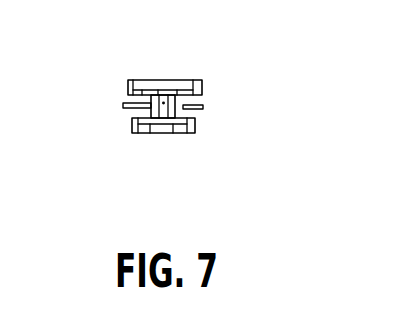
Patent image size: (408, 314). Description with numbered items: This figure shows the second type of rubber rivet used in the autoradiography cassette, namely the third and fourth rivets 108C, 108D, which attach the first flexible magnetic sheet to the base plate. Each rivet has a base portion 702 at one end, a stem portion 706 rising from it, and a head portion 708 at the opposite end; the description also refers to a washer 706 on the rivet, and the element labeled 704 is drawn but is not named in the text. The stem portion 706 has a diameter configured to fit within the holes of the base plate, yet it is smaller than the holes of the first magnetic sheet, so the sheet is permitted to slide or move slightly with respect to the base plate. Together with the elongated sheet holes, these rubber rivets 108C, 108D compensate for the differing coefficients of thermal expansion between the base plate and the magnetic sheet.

The third rivet 108C is at (172, 70).
The fourth rivet 108D is at (168, 124).
The base portion 702 is at (195, 125).
The central post 704 is at (132, 121).
The stem portion 706 is at (123, 104).
The head portion 708 is at (203, 85).